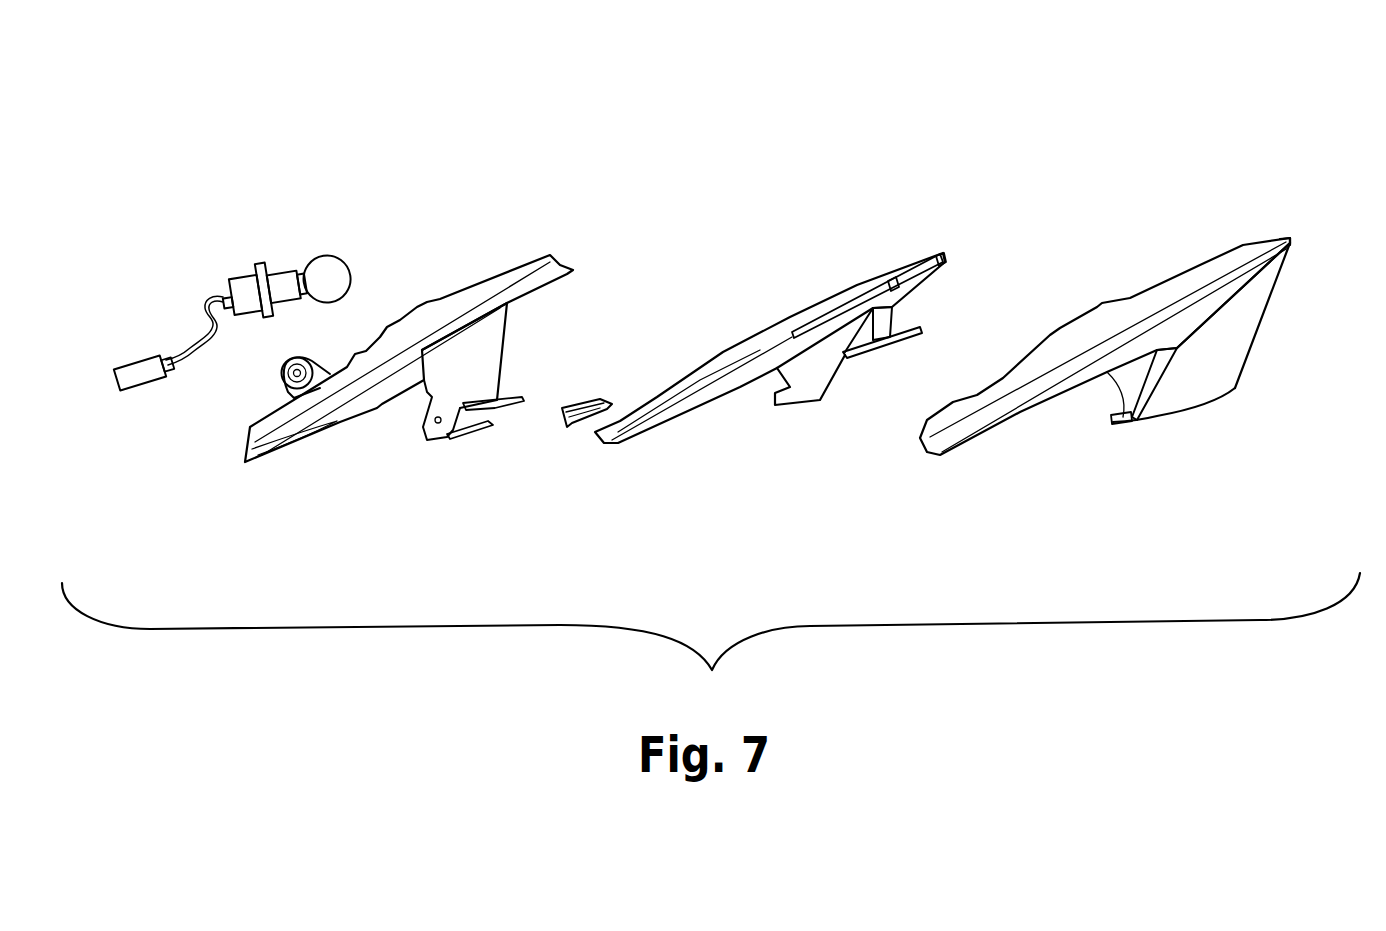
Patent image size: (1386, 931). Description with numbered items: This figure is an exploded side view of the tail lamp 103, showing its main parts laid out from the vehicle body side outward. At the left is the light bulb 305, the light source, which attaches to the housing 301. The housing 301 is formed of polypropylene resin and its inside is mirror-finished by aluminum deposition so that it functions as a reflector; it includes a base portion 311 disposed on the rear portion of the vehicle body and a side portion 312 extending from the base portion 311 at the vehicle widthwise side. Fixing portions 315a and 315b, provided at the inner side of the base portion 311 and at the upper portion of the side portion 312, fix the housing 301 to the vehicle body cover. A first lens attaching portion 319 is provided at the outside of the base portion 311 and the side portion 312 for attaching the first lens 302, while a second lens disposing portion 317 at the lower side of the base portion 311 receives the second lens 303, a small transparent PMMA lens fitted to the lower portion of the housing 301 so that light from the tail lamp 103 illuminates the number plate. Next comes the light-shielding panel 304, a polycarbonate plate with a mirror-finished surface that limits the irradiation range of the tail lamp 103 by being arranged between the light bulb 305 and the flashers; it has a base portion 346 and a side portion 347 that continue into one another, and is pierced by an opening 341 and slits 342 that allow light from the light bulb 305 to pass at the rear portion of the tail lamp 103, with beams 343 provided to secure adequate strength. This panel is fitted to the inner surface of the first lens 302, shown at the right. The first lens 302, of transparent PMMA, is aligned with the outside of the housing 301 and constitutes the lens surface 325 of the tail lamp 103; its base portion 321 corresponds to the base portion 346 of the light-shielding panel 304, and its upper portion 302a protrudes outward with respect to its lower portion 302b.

The tail lamp 103 is at (925, 130).
The light bulb 305 is at (326, 250).
The housing 301 is at (455, 285).
The first lens attaching portion 319 is at (548, 258).
The base portion 311 is at (505, 335).
The second lens disposing portion 317 is at (510, 410).
The fixing portion 315a is at (430, 430).
The fixing portion 315b is at (282, 365).
The side portion 312 is at (350, 430).
The second lens 303 is at (575, 428).
The light-shielding panel 304 is at (758, 320).
The slits 342 is at (910, 275).
The beams 343 is at (940, 255).
The opening 341 is at (940, 281).
The base portion 346 is at (935, 335).
The side portion 347 is at (720, 385).
The first lens 302 is at (1170, 270).
The upper portion 302a is at (1290, 235).
The lens surface 325 is at (1230, 372).
The base portion 321 is at (1262, 342).
The lower portion 302b is at (1252, 378).